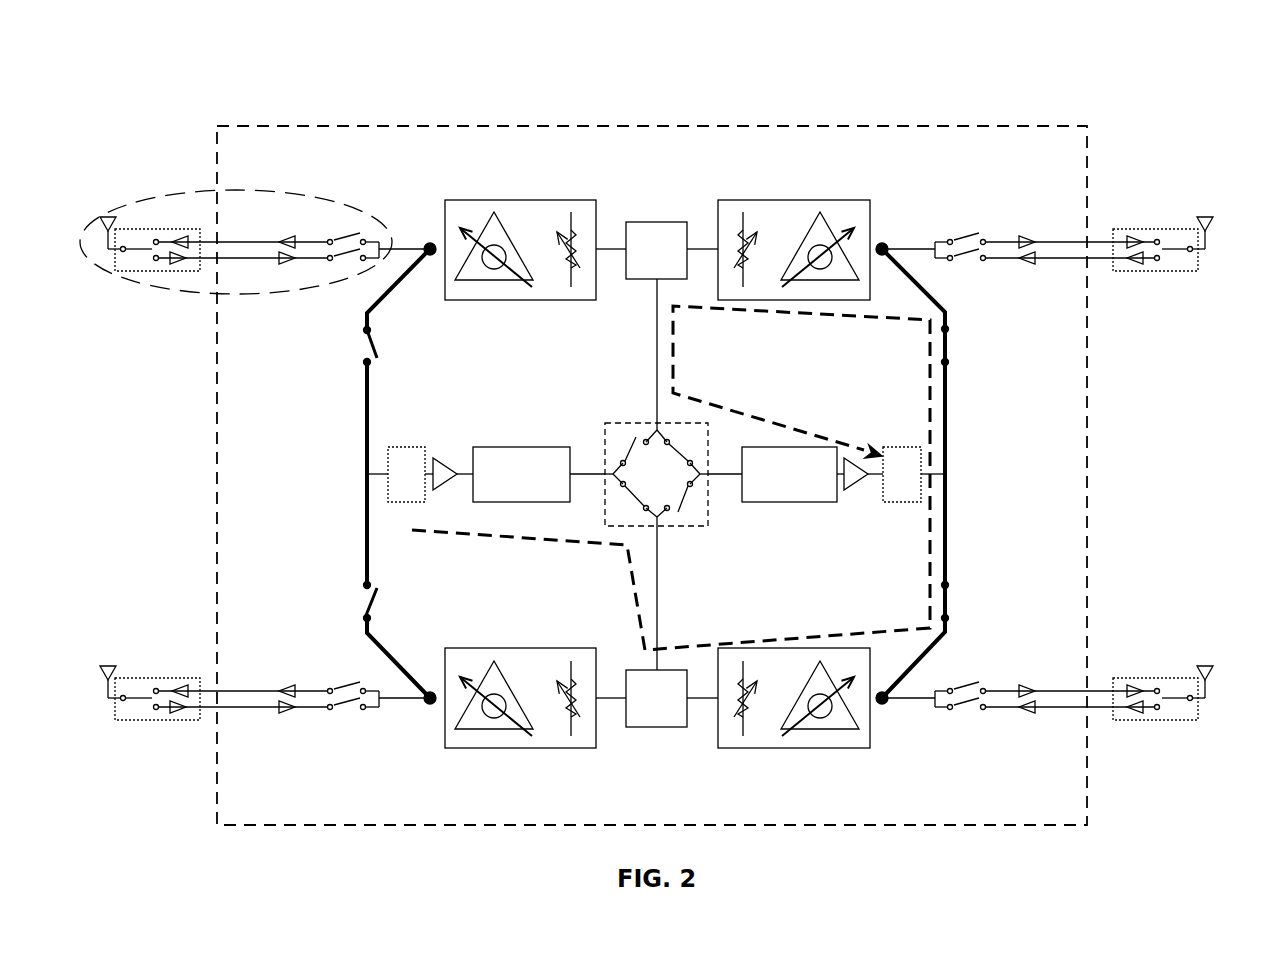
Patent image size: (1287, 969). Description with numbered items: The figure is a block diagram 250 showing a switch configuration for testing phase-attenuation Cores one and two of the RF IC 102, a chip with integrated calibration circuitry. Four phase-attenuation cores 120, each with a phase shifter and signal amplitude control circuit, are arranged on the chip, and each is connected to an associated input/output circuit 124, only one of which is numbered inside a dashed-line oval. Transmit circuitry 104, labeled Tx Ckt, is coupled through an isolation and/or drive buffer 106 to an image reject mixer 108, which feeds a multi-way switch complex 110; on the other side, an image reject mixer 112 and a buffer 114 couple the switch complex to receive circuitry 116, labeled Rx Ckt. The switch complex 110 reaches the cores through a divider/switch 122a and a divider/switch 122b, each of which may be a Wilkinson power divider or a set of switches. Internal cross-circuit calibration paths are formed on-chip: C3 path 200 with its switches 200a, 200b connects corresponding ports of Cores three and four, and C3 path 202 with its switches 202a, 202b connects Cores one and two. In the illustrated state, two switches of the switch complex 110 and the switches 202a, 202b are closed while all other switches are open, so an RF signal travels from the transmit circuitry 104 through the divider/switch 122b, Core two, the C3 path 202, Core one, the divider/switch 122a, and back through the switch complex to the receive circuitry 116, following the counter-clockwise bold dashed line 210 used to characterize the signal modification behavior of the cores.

The block diagram 250 is at (150, 81).
The RF IC 102 is at (1088, 152).
The input/output circuit 124 is at (138, 196).
The phase-attenuation core 120 is at (445, 201).
The divider/switch 122a is at (660, 222).
The divider/switch 122b is at (657, 727).
The C3 path 200 is at (348, 462).
The switch 200a is at (348, 347).
The switch 200b is at (348, 605).
The C3 path 202 is at (965, 461).
The switch 202a is at (967, 346).
The switch 202b is at (967, 605).
The transmit circuitry 104 is at (410, 447).
The isolation and/or drive buffer 106 is at (450, 458).
The image reject mixer 108 is at (522, 447).
The multi-way switch complex 110 is at (708, 528).
The image reject mixer 112 is at (787, 502).
The isolation and/or drive buffer 114 is at (851, 490).
The receive circuitry 116 is at (900, 502).
The bold dashed line 210 is at (500, 545).